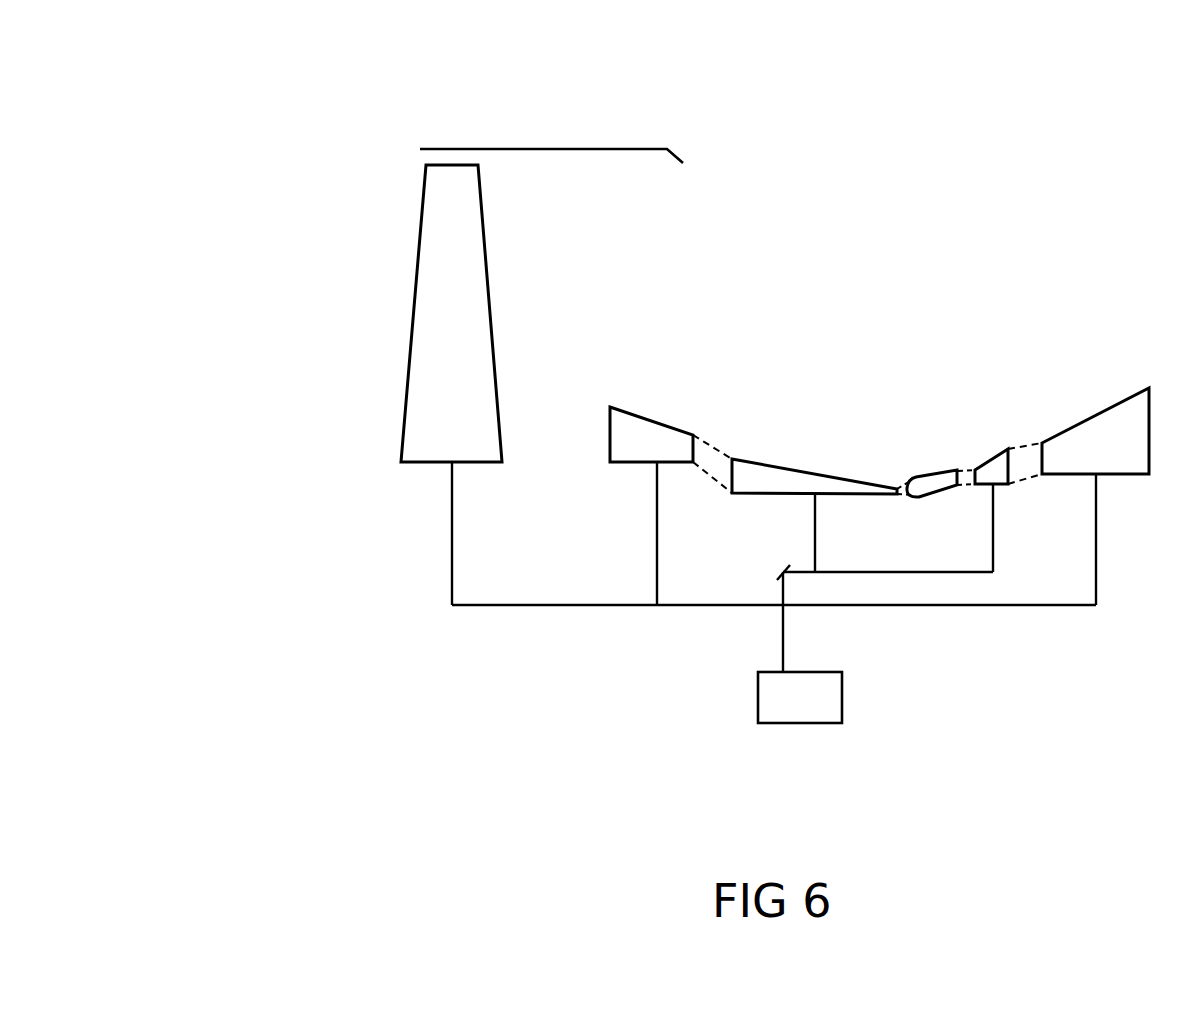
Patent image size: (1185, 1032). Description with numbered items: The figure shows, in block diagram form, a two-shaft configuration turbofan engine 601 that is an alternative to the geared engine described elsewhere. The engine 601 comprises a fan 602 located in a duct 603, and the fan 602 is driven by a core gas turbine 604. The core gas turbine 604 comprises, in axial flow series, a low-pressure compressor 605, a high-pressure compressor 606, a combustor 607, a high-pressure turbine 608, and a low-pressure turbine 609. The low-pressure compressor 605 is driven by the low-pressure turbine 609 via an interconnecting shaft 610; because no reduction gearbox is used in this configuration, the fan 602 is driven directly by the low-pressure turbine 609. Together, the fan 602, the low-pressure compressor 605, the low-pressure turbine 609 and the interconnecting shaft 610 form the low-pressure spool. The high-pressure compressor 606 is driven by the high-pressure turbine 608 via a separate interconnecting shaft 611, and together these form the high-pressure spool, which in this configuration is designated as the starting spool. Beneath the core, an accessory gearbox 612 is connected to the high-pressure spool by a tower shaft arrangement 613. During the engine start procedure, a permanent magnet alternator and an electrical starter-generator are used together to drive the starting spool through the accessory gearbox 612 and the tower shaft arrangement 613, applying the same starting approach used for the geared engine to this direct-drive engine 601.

The turbofan engine 601 is at (258, 55).
The fan 602 is at (432, 189).
The duct 603 is at (655, 149).
The core gas turbine 604 is at (1031, 328).
The low-pressure compressor 605 is at (668, 423).
The high-pressure compressor 606 is at (782, 486).
The combustor 607 is at (912, 478).
The high-pressure turbine 608 is at (975, 470).
The low-pressure turbine 609 is at (1078, 425).
The interconnecting shaft 610 is at (1096, 588).
The interconnecting shaft 611 is at (993, 542).
The accessory gearbox 612 is at (758, 718).
The tower shaft arrangement 613 is at (783, 622).